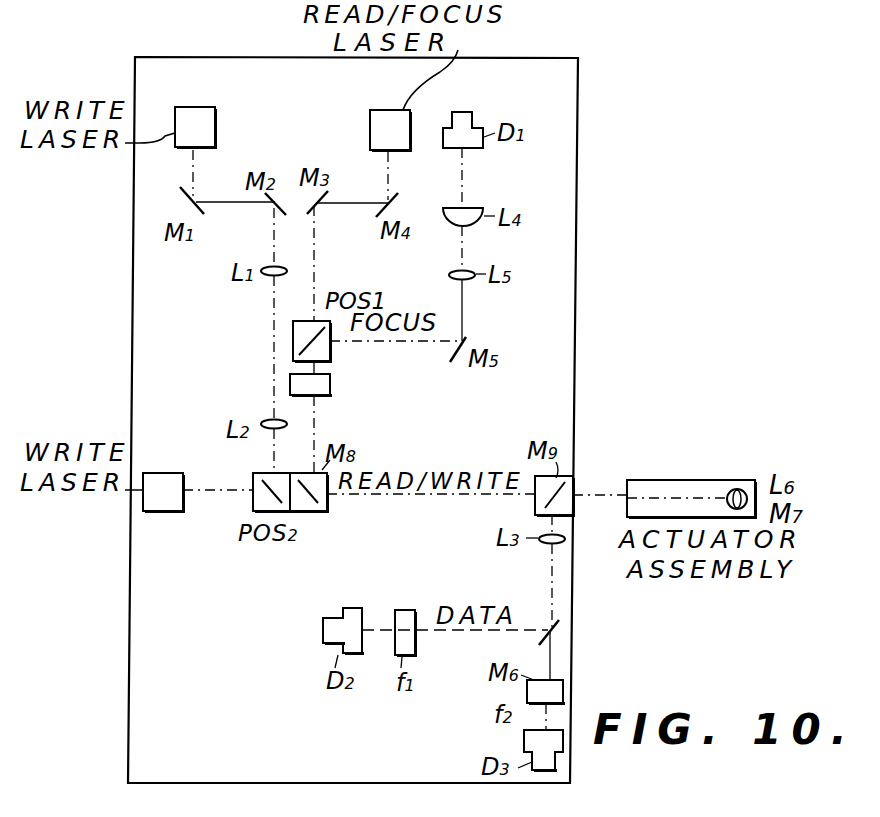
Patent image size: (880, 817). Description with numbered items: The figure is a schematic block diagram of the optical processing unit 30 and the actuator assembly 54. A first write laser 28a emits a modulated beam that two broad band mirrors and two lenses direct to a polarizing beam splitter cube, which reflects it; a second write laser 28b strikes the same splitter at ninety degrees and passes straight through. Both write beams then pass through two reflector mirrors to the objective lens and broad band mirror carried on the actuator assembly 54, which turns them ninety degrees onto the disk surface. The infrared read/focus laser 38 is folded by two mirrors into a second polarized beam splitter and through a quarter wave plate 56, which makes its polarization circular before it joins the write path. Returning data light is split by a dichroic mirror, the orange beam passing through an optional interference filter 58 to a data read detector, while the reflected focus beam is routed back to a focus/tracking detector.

The optical processing unit 30 is at (602, 204).
The first write laser 28a is at (208, 99).
The second write laser 28b is at (165, 513).
The read/focus laser 38 is at (370, 128).
The actuator assembly 54 is at (721, 450).
The quarter-wave plate 56 is at (322, 396).
The filter f1 58 is at (418, 578).